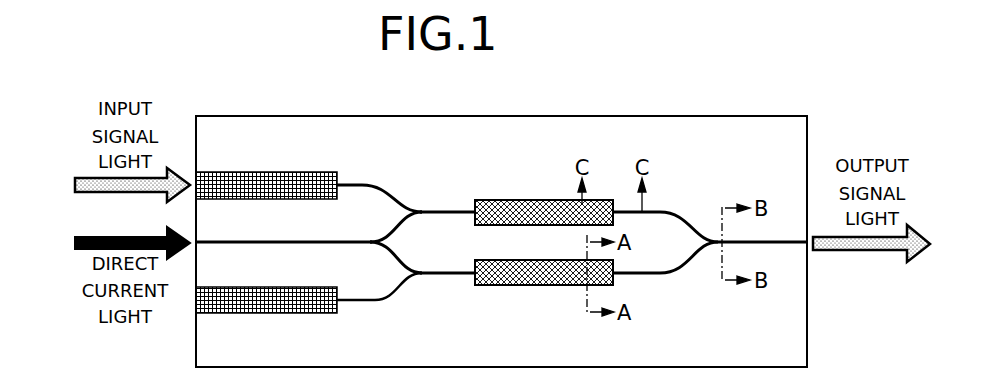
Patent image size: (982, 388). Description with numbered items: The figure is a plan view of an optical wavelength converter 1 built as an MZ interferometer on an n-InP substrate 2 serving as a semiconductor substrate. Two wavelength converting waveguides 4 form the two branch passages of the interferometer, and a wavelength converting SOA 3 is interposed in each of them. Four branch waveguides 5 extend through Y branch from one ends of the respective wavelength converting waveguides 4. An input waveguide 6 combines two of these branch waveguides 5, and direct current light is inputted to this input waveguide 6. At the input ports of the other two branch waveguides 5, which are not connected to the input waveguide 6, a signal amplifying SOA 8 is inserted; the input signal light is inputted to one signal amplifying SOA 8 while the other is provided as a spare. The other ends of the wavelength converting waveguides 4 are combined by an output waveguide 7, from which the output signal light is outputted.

The optical wavelength converter 1 is at (573, 105).
The n-InP substrate 2 is at (360, 130).
The wavelength converting SOA 3 is at (510, 210).
The wavelength converting waveguide 4 is at (448, 209).
The branch waveguide 5 is at (400, 190).
The input waveguide 6 is at (237, 241).
The output waveguide 7 is at (755, 241).
The signal amplifying SOA 8 is at (226, 174).